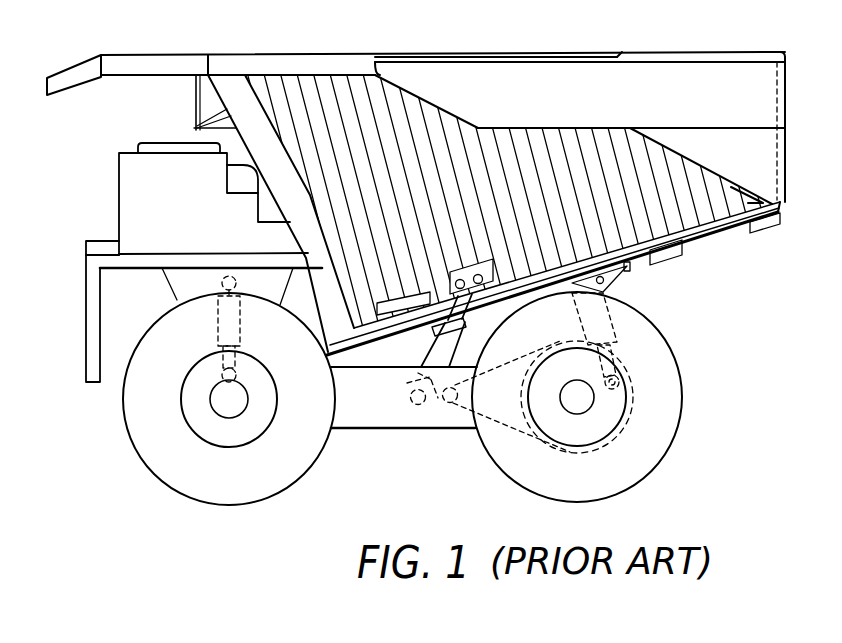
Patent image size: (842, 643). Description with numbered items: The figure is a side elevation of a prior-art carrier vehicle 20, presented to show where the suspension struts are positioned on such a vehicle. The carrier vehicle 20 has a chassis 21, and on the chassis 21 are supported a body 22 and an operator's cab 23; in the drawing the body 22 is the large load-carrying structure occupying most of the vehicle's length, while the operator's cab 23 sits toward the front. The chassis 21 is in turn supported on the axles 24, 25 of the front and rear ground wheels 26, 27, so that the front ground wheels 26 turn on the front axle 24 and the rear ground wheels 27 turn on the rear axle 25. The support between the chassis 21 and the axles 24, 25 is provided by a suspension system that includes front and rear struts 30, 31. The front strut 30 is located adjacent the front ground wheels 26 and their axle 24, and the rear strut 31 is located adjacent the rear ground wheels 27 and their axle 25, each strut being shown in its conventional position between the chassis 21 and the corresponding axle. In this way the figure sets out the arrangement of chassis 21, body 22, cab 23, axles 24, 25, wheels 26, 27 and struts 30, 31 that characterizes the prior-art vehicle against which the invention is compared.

The carrier vehicle 20 is at (77, 56).
The chassis 21 is at (660, 292).
The body 22 is at (504, 52).
The operator's cab 23 is at (119, 180).
The front axle 24 is at (212, 399).
The rear axle 25 is at (592, 397).
The front ground wheels 26 is at (137, 440).
The rear ground wheels 27 is at (668, 445).
The front strut 30 is at (218, 317).
The rear strut 31 is at (617, 322).